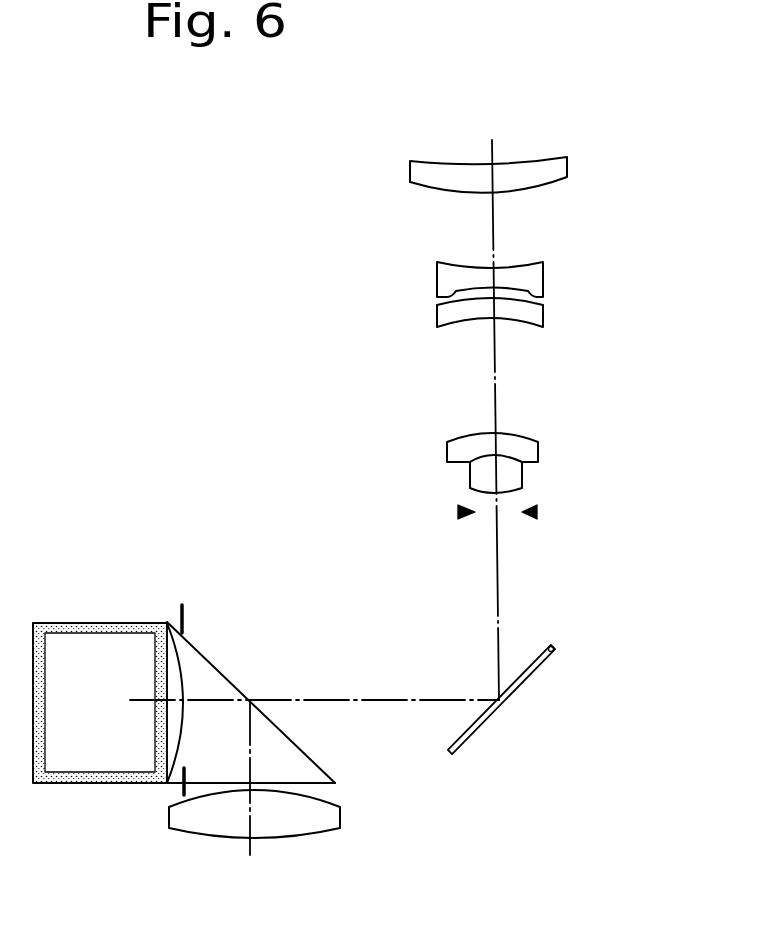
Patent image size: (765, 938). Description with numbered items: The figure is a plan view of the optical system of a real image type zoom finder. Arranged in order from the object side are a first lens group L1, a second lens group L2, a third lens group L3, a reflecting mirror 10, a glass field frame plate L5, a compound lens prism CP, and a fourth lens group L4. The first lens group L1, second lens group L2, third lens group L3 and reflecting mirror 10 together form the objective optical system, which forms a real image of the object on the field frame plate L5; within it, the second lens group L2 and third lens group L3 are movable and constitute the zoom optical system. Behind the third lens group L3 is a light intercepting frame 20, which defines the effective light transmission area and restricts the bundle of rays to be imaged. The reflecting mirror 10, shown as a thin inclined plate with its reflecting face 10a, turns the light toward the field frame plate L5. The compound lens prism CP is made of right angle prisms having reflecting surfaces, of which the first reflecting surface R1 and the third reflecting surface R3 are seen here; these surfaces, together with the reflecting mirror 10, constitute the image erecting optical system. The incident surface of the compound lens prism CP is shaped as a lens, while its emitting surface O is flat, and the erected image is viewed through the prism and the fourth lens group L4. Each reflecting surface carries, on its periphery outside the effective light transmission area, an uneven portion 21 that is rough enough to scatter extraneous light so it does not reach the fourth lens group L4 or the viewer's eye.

The first lens group L1 is at (553, 175).
The second lens group L2 is at (543, 283).
The third lens group L3 is at (522, 477).
The fourth lens group L4 is at (213, 828).
The glass field frame plate L5 is at (183, 623).
The emitting surface O is at (499, 389).
The light intercepting frame 20 is at (537, 512).
The reflecting mirror 10 is at (553, 643).
The reflecting surface of mirror 10a is at (550, 648).
The uneven portion 21 is at (53, 778).
The first reflecting surface R1 is at (82, 645).
The third reflecting surface R3 is at (220, 670).
The compound lens prism CP is at (102, 755).